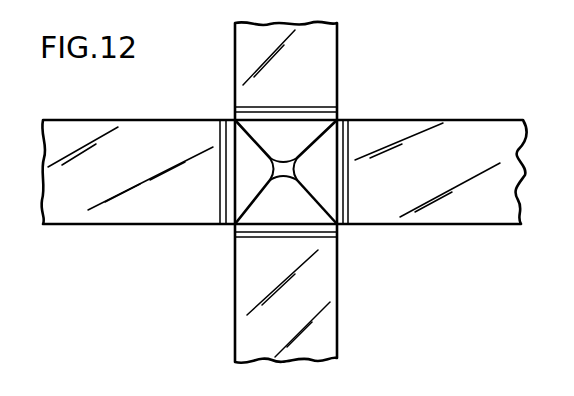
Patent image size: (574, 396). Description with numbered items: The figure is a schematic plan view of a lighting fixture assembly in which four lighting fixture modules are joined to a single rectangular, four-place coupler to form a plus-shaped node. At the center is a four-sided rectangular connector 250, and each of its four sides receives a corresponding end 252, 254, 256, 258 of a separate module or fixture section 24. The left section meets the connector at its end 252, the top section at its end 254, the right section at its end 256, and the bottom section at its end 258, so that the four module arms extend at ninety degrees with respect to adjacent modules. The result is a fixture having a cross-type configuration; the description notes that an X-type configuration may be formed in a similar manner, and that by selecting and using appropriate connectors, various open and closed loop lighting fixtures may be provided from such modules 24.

The module or fixture section 24 is at (317, 52).
The four-sided rectangular connector 250 is at (273, 203).
The end of module or fixture section 252 is at (220, 136).
The end of module or fixture section 254 is at (306, 106).
The end of module or fixture section 256 is at (352, 147).
The end of module or fixture section 258 is at (298, 238).